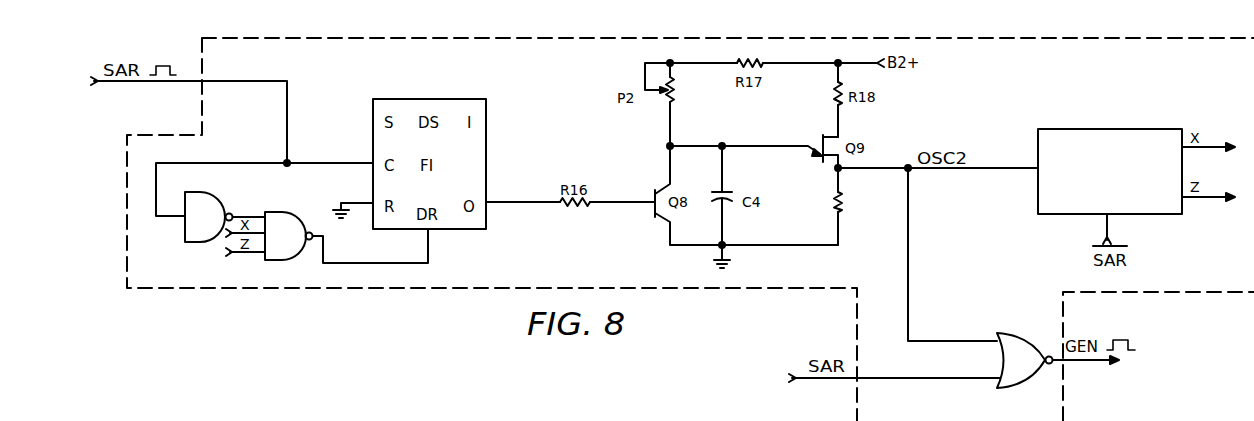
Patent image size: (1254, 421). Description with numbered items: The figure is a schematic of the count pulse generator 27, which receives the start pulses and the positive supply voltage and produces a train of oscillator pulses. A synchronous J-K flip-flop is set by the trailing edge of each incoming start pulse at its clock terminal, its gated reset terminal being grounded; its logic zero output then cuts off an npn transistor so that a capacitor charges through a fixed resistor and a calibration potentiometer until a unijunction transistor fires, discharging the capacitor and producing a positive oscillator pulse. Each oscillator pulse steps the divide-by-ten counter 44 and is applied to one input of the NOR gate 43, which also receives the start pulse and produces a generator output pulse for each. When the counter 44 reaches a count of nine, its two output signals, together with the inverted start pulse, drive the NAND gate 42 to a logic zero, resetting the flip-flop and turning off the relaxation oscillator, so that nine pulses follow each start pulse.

The count pulse generator 27 is at (560, 121).
The NAND gate 42 is at (297, 213).
The NOR gate 43 is at (1017, 333).
The divide-by-10 counter 44 is at (1128, 129).